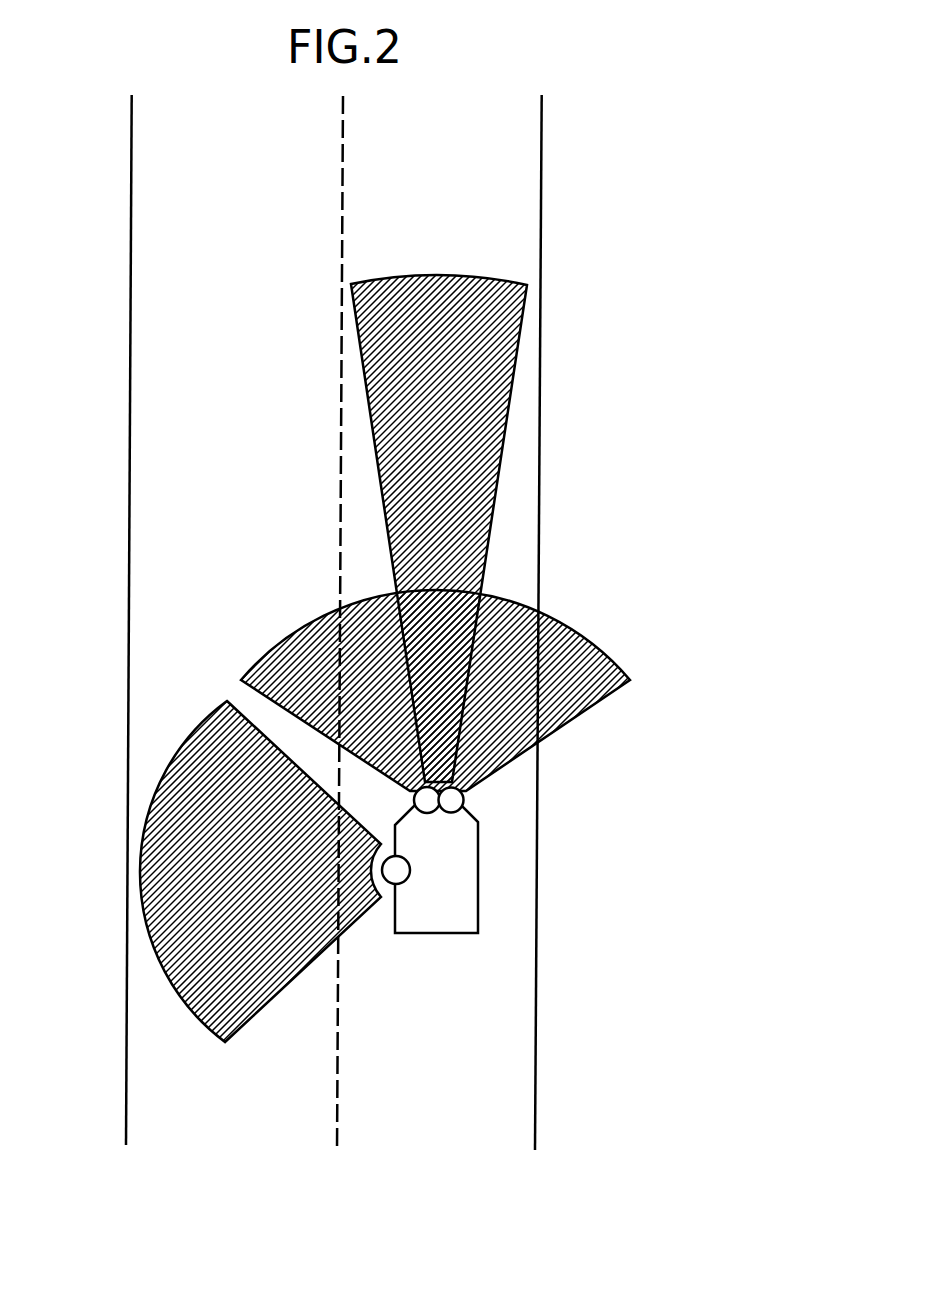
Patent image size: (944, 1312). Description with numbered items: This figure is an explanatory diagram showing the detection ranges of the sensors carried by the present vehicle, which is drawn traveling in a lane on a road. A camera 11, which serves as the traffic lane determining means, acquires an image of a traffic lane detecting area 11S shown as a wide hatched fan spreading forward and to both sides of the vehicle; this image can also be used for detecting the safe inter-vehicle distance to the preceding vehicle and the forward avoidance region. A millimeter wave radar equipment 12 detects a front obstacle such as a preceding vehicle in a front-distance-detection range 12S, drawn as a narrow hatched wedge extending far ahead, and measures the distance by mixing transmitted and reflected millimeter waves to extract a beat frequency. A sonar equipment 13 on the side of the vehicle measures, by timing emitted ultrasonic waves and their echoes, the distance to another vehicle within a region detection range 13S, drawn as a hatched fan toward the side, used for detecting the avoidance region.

The camera 11 is at (463, 801).
The millimeter wave radar equipment 12 is at (427, 813).
The sonar equipment 13 is at (410, 870).
The traffic lane detecting area 11S is at (610, 652).
The front-distance-detection range 12S is at (522, 321).
The region detection range 13S is at (142, 864).